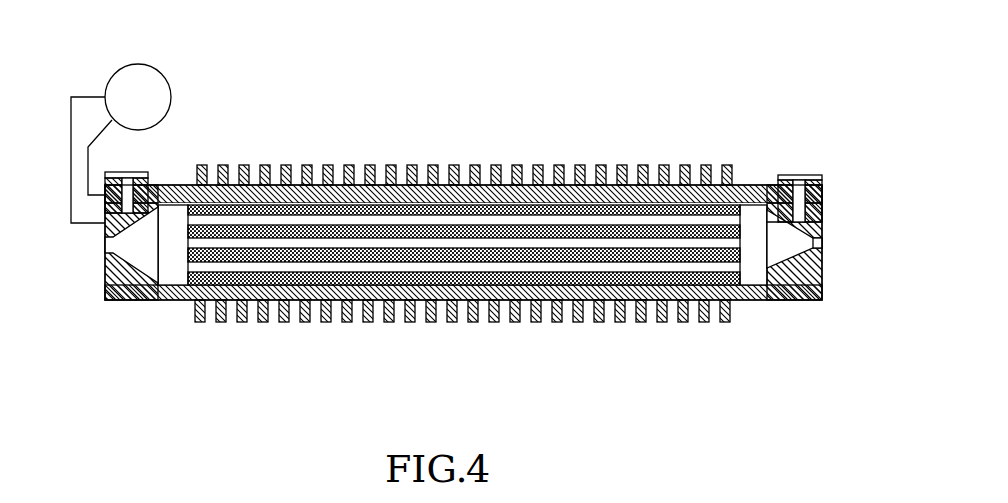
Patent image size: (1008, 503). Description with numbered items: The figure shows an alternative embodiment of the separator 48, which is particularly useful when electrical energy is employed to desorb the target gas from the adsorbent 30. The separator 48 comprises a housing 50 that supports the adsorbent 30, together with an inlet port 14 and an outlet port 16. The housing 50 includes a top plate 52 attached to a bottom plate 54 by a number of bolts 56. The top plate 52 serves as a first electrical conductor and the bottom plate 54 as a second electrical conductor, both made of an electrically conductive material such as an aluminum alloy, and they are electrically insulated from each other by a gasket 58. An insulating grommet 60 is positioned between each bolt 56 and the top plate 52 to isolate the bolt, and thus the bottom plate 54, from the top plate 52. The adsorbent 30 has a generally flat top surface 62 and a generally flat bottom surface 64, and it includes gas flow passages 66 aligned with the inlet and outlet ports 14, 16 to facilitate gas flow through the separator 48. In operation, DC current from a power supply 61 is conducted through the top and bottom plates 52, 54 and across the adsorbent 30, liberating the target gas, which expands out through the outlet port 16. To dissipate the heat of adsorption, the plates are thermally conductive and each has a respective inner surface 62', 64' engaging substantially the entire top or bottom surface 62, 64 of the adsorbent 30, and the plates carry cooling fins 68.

The inlet port 14 is at (105, 245).
The outlet port 16 is at (823, 243).
The adsorbent 30 is at (229, 201).
The separator 48 is at (578, 121).
The housing 50 is at (755, 184).
The top plate 52 is at (483, 184).
The bottom plate 54 is at (482, 301).
The bolts 56 is at (803, 175).
The gasket 58 is at (823, 208).
The insulating grommet 60 is at (823, 183).
The power supply 61 is at (151, 109).
The top surface 62 is at (464, 164).
The inner surface 62' is at (464, 168).
The bottom surface 64 is at (464, 329).
The inner surface 64' is at (464, 326).
The gas flow passages 66 is at (533, 240).
The cooling fins 68 is at (662, 323).